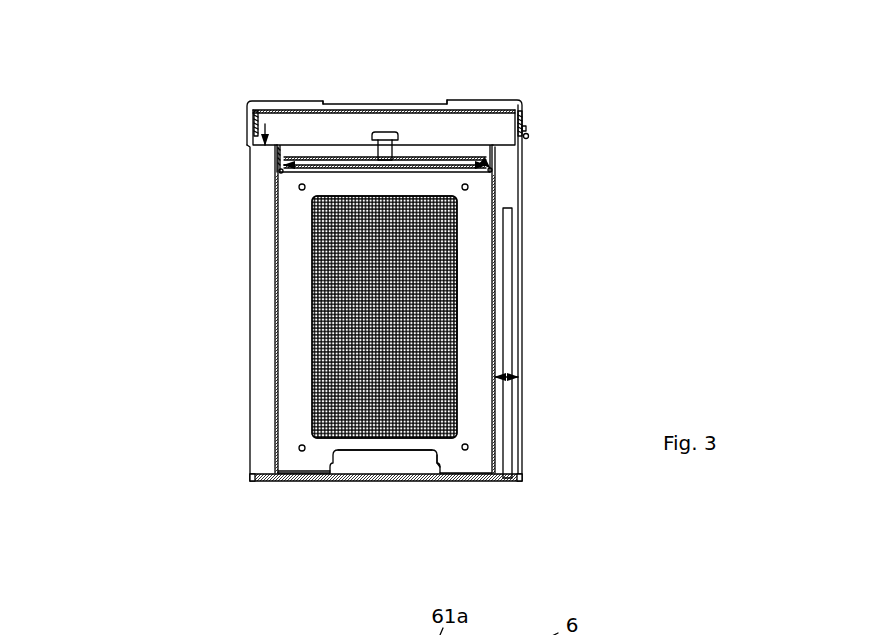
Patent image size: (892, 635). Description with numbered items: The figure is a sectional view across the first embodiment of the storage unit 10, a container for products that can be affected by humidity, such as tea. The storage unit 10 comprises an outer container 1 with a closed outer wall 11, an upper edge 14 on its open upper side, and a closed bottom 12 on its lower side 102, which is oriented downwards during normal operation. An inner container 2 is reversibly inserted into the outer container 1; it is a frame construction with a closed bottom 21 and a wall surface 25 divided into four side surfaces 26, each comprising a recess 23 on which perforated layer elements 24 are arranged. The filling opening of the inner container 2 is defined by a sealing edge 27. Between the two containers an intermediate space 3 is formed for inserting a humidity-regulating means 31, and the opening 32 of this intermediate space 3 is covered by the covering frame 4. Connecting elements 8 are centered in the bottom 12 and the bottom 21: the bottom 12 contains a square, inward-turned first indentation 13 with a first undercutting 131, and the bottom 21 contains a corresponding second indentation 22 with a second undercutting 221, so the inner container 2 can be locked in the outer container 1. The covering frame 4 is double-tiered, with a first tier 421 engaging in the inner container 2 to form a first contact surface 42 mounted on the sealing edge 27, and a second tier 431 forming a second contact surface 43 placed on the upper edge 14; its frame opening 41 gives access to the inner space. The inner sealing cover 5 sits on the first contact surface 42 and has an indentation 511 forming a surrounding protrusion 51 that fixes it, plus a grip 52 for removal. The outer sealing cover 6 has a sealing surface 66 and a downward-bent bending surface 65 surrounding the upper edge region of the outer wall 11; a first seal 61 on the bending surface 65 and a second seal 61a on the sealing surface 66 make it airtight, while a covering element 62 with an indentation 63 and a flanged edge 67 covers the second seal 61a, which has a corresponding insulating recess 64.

The storage unit 10 is at (723, 320).
The outer container 1 is at (248, 345).
The outer wall 11 is at (277, 372).
The bottom 12 is at (493, 481).
The first indentation 13 is at (424, 454).
The first undercutting 131 is at (437, 458).
The upper edge 14 is at (526, 124).
The inner container 2 is at (274, 405).
The closed bottom 21 is at (470, 473).
The second indentation 22 is at (327, 449).
The second undercutting 221 is at (330, 464).
The recess 23 is at (312, 282).
The perforated layer element 24 is at (440, 291).
The wall surface 25 is at (300, 312).
The side surface 26 is at (487, 320).
The sealing edge 27 is at (494, 173).
The intermediate space 3 is at (520, 377).
The humidity-regulating means 31 is at (507, 332).
The opening 32 is at (250, 137).
The covering frame 4 is at (276, 144).
The frame opening 41 is at (393, 167).
The first contact surface 42 is at (506, 144).
The first tier 421 is at (492, 168).
The second contact surface 43 is at (524, 123).
The second tier 431 is at (526, 135).
The inner sealing cover 5 is at (383, 148).
The protrusion 51 is at (277, 148).
The indentation 511 is at (279, 161).
The grip 52 is at (281, 170).
The outer sealing cover 6 is at (498, 95).
The first seal 61 is at (531, 127).
The second seal 61a is at (470, 98).
The covering element 62 is at (499, 112).
The indentation 63 is at (347, 99).
The insulating recess 64 is at (323, 101).
The bending surface 65 is at (252, 118).
The sealing surface 66 is at (418, 101).
The flanged edge 67 is at (528, 119).
The connecting element 8 is at (384, 446).
The lower side 102 is at (315, 512).